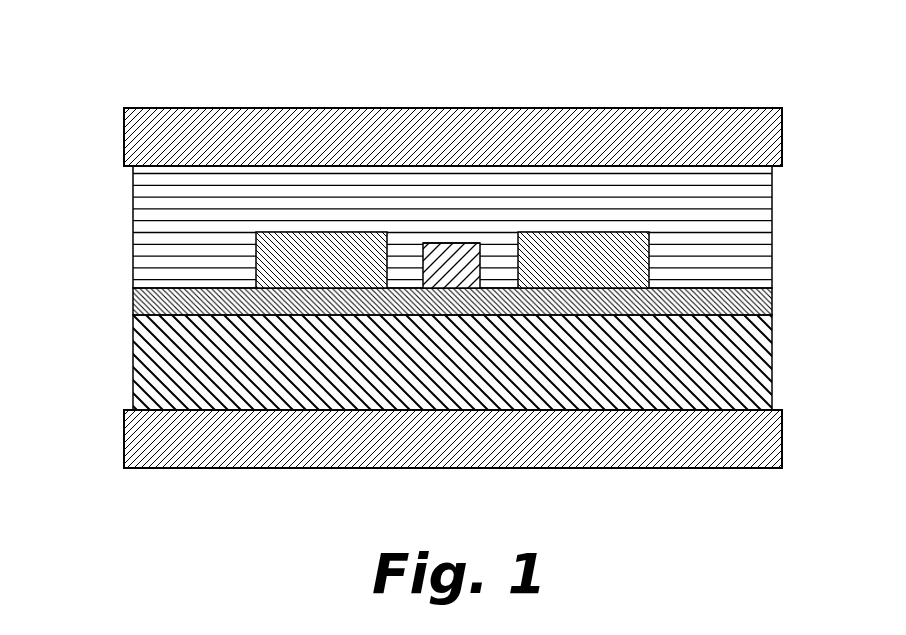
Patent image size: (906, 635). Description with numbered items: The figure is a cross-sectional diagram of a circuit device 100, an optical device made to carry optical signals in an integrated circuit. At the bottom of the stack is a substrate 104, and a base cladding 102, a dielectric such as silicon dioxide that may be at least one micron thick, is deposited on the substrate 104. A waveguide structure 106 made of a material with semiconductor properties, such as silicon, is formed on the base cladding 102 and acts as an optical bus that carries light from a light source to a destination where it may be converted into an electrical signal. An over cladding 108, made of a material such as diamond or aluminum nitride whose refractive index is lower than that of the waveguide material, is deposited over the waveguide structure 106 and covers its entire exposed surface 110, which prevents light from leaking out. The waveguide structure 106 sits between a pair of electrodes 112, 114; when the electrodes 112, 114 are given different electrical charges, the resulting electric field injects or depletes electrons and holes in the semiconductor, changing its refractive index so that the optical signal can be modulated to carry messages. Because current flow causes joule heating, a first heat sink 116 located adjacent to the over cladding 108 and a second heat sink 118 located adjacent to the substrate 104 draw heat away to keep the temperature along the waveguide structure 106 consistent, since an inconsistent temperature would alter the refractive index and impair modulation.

The circuit device 100 is at (96, 58).
The base cladding 102 is at (167, 300).
The substrate 104 is at (165, 371).
The waveguide structure 106 is at (456, 252).
The over cladding 108 is at (178, 243).
The exposed surface 110 is at (433, 243).
The electrode 112 is at (283, 255).
The electrode 114 is at (631, 251).
The first heat sink 116 is at (160, 147).
The second heat sink 118 is at (157, 441).